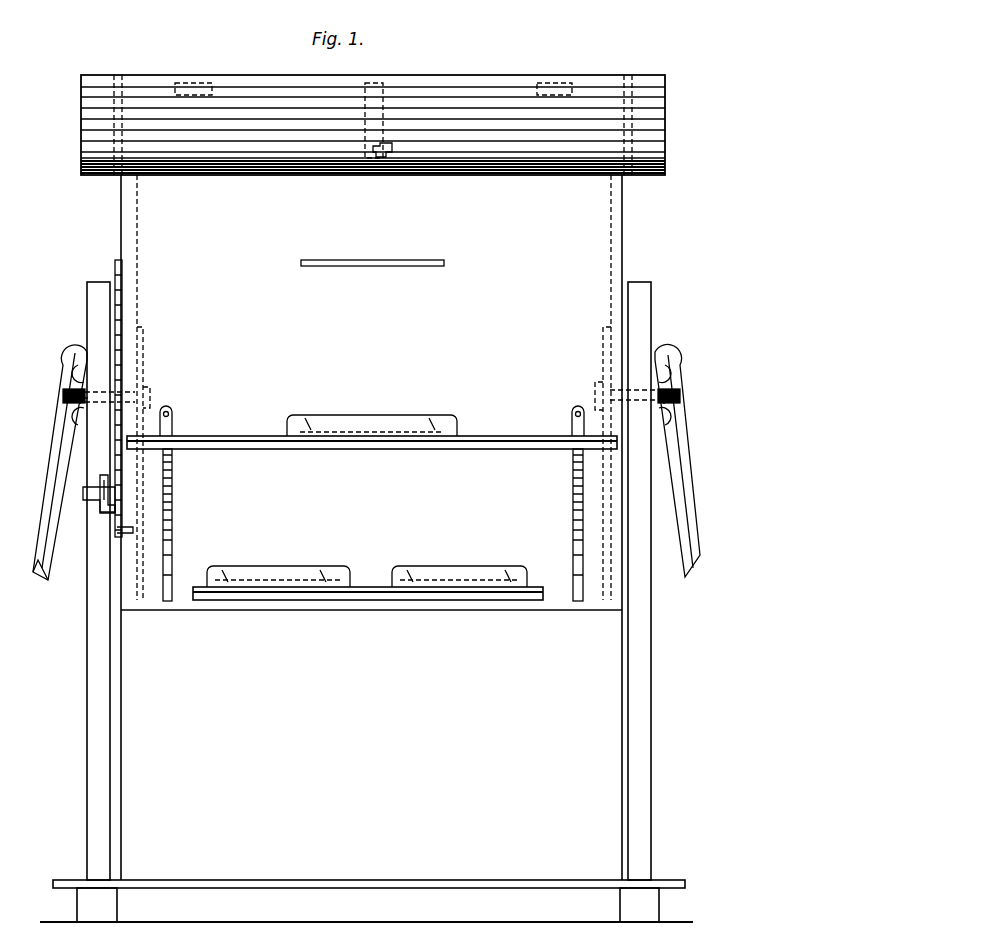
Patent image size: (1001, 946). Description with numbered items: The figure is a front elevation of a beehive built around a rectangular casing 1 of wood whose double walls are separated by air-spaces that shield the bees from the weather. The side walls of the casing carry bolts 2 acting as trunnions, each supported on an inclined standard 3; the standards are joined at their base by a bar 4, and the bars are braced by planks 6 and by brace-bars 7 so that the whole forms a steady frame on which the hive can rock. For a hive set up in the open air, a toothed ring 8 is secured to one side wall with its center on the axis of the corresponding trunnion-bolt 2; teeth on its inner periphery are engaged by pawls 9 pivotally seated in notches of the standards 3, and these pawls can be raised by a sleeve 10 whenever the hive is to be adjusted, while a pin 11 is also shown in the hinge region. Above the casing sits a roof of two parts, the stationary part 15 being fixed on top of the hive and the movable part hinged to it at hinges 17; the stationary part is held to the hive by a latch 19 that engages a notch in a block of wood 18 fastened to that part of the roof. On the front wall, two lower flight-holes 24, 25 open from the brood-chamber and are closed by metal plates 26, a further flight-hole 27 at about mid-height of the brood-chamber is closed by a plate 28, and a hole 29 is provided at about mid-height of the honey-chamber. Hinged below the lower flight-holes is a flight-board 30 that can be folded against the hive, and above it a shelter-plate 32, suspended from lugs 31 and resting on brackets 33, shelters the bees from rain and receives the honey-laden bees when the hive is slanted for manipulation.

The rectangular casing 1 is at (121, 231).
The bolt 2 is at (65, 390).
The inclined standard 3 is at (369, 581).
The bar 4 is at (366, 905).
The plank 6 is at (258, 886).
The brace-bar 7 is at (58, 458).
The toothed ring 8 is at (115, 281).
The pawl 9 is at (105, 513).
The sleeve 10 is at (92, 505).
The pivot pin 11 is at (80, 407).
The stationary roof part 15 is at (667, 156).
The hinge 17 is at (200, 84).
The block of wood 18 is at (388, 84).
The latch 19 is at (389, 160).
The lower flight-hole 24 is at (298, 580).
The lower flight-hole 25 is at (482, 580).
The metal plate 26 is at (216, 570).
The flight-hole 27 is at (362, 432).
The plate 28 is at (458, 424).
The hole 29 is at (395, 266).
The flight-board 30 is at (236, 601).
The lug 31 is at (173, 428).
The shelter-plate 32 is at (505, 449).
The bracket 33 is at (173, 470).